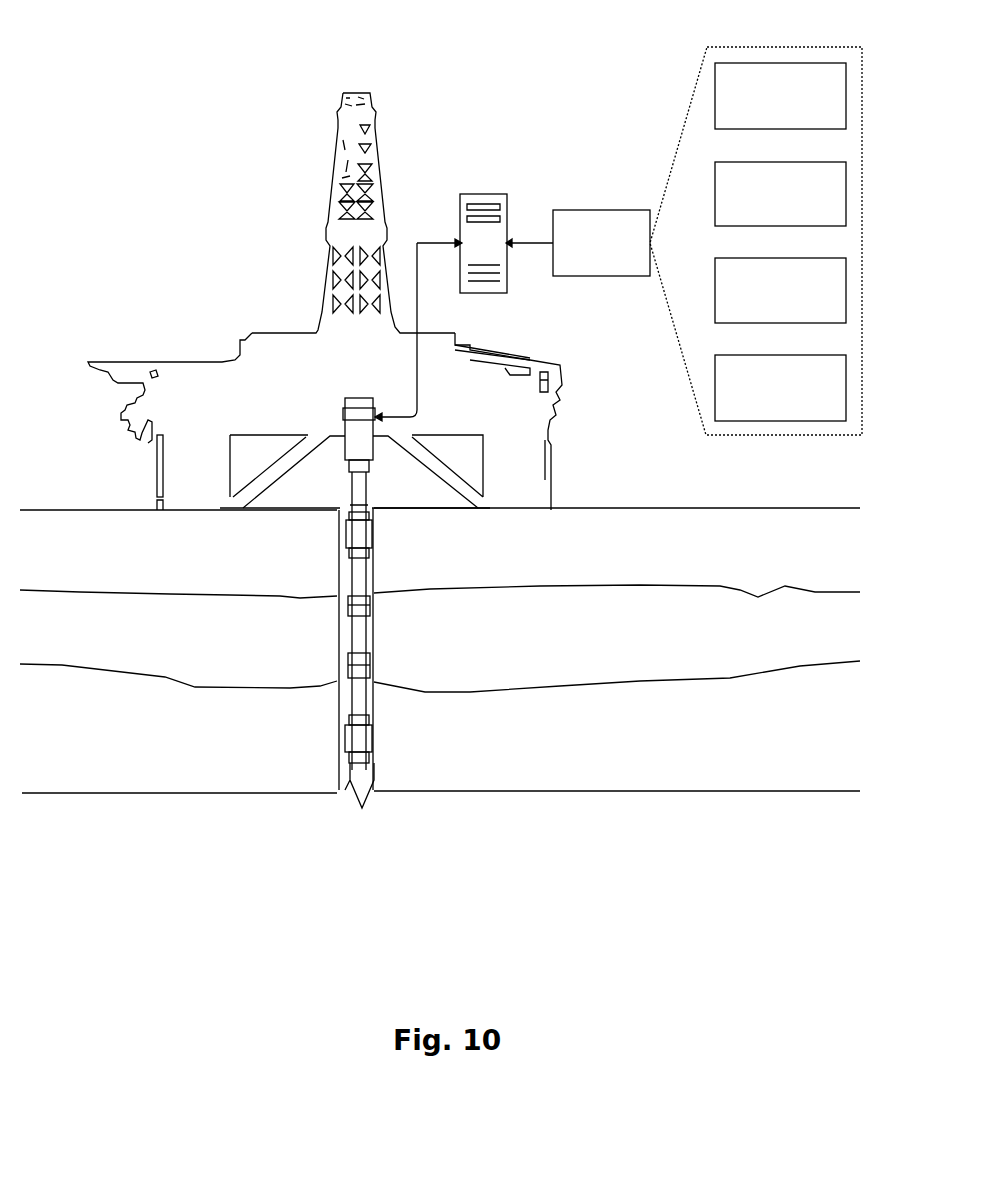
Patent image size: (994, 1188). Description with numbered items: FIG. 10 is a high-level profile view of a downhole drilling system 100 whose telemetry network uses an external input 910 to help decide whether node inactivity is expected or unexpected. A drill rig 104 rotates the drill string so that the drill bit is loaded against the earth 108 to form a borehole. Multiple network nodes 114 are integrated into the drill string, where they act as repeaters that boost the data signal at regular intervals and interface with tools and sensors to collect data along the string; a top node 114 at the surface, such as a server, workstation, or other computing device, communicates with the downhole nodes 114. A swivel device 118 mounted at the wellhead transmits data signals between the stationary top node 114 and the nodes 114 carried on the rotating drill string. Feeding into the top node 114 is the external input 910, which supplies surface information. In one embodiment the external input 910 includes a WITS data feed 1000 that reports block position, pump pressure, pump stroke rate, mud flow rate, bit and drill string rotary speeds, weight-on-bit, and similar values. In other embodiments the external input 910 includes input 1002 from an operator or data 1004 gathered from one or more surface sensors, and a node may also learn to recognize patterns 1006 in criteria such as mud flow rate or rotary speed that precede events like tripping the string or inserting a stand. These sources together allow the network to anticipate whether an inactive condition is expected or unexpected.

The downhole drilling system 100 is at (162, 182).
The drill rig 104 is at (282, 345).
The earth 108 is at (127, 565).
The network nodes 114 is at (485, 196).
The swivel device 118 is at (345, 415).
The external input 910 is at (603, 218).
The WITS data feed 1000 is at (724, 100).
The input from an operator 1002 is at (723, 182).
The data gathered from surface sensors 1004 is at (723, 294).
The patterns 1006 is at (725, 375).